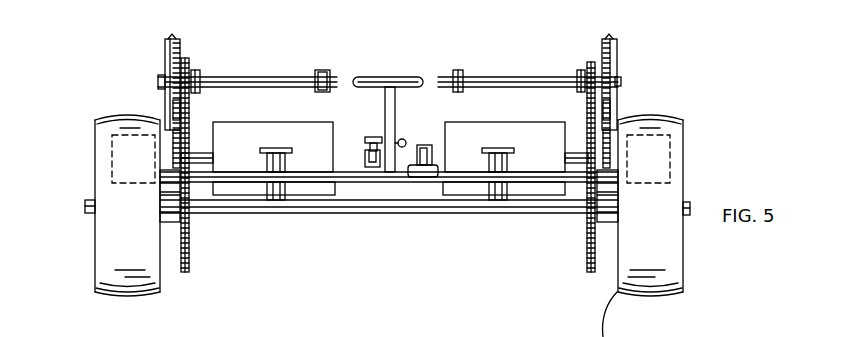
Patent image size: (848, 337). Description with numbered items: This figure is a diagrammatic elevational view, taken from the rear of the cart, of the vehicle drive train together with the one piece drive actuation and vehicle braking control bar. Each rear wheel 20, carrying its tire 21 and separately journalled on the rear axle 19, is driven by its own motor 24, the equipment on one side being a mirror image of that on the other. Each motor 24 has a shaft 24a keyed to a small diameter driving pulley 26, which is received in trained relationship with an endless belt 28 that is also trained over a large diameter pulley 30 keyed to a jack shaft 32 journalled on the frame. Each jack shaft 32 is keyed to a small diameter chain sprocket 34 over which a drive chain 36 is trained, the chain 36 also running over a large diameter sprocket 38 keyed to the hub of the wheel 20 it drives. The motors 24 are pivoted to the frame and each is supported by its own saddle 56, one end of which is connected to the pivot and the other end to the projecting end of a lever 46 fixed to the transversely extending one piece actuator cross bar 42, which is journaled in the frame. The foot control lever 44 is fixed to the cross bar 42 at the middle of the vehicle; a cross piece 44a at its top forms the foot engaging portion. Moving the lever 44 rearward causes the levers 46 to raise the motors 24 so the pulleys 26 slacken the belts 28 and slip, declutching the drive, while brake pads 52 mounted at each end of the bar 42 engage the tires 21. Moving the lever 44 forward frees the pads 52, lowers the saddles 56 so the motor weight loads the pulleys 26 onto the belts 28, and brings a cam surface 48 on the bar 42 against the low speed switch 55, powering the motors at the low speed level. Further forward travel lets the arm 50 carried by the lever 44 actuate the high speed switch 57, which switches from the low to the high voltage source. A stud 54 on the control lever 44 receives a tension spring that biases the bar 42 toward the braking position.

The rear axle 19 is at (391, 214).
The wheel 20 is at (160, 290).
The tire 21 is at (665, 258).
The motor 24 is at (280, 125).
The motor shaft 24a is at (205, 158).
The small diameter driving pulley 26 is at (182, 150).
The endless belt 28 is at (173, 36).
The large diameter pulley 30 is at (165, 57).
The jack shaft 32 is at (247, 77).
The small diameter chain sprocket 34 is at (191, 62).
The drive chain 36 is at (186, 113).
The large diameter sprocket 38 is at (190, 251).
The actuator cross bar 42 is at (357, 183).
The foot control lever 44 is at (383, 78).
The handle cross bar 44a is at (418, 77).
The lever 46 is at (286, 155).
The cam surface 48 is at (432, 165).
The arm 50 is at (368, 140).
The brake pad 52 is at (98, 142).
The stud 54 is at (404, 139).
The low speed switch 55 is at (408, 172).
The saddle 56 is at (277, 201).
The high speed switch 57 is at (366, 162).